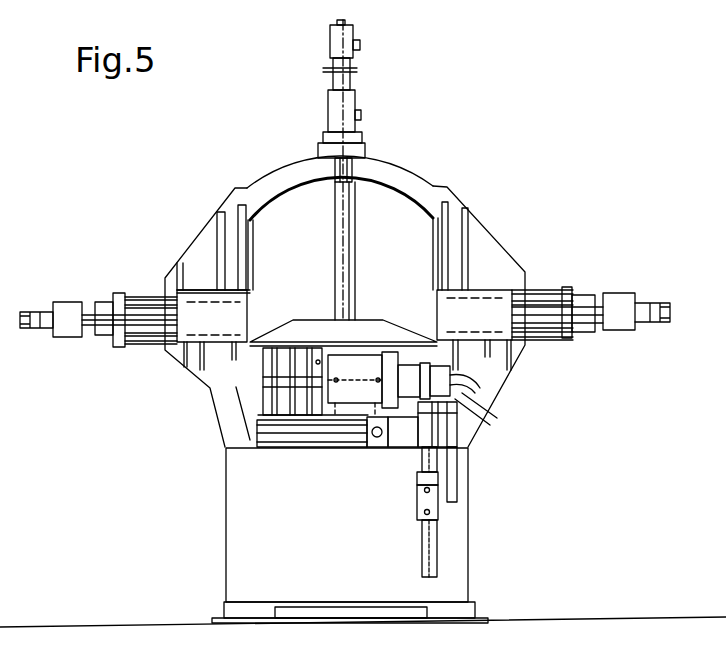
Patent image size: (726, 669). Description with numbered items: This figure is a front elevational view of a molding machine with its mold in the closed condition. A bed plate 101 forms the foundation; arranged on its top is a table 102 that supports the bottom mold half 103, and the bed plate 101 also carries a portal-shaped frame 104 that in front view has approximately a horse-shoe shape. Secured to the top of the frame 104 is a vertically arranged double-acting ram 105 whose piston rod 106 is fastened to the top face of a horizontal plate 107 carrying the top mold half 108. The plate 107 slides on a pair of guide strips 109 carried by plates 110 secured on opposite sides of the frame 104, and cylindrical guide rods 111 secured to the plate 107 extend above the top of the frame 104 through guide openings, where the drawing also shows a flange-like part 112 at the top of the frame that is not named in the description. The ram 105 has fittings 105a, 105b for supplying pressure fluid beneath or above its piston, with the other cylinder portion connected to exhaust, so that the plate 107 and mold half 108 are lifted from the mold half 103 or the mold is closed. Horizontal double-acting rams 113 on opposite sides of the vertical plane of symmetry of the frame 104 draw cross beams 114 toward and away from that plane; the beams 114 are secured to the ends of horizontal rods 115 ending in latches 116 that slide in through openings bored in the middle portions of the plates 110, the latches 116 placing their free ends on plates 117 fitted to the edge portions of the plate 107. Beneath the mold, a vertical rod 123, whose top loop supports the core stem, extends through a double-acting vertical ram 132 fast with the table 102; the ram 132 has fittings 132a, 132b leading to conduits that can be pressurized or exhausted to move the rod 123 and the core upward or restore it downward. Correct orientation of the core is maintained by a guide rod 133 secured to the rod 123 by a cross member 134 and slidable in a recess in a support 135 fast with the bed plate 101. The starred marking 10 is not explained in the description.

The workpiece 10 is at (218, 357).
The bed plate 101 is at (238, 548).
The table 102 is at (257, 425).
The bottom mold half 103 is at (302, 403).
The portal-shaped frame 104 is at (388, 170).
The double-acting ram 105 is at (352, 98).
The fitting 105a is at (361, 115).
The fitting 105b is at (360, 46).
The piston rod 106 is at (350, 282).
The horizontal plate 107 is at (363, 322).
The top mold half 108 is at (280, 368).
The guide strips 109 is at (252, 250).
The plates 110 is at (208, 232).
The cylindrical guide rods 111 is at (345, 208).
The flange 112 is at (338, 165).
The rams 113 is at (103, 302).
The cross beams 114 is at (73, 307).
The horizontal rods 115 is at (110, 335).
The latches 116 is at (176, 264).
The plates 117 is at (263, 336).
The vertical rod 123 is at (425, 458).
The double-acting vertical ram 132 is at (427, 505).
The fitting 132a is at (420, 513).
The fitting 132b is at (423, 488).
The guide rod 133 is at (450, 474).
The cross member 134 is at (460, 405).
The support 135 is at (433, 428).